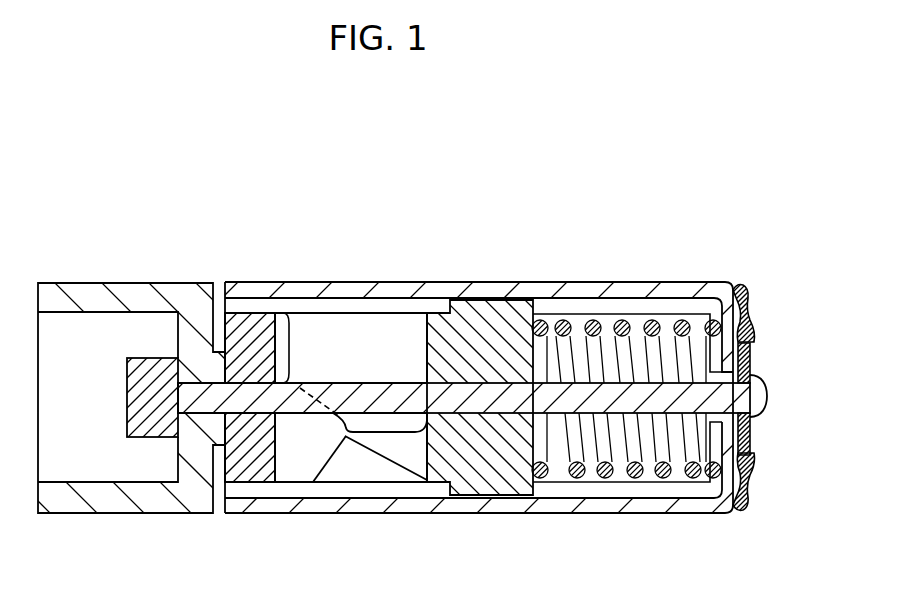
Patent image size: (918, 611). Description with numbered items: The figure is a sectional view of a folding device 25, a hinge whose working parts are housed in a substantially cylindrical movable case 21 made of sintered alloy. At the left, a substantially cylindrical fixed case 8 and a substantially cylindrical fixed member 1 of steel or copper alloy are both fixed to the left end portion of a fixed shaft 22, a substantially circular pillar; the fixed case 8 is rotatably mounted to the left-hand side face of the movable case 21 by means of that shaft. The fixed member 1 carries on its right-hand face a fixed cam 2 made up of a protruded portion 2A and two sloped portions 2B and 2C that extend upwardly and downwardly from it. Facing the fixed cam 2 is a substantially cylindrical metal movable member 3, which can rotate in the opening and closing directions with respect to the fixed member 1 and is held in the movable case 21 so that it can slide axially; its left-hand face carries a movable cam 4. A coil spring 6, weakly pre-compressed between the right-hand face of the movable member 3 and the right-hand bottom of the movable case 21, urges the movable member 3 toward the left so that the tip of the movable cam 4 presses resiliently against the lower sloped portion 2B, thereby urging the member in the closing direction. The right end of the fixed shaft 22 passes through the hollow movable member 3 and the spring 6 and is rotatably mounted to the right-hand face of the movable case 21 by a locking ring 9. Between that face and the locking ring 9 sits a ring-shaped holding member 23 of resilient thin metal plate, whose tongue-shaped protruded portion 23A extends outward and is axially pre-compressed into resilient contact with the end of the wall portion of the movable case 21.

The fixed member 1 is at (245, 473).
The fixed cam 2 is at (343, 400).
The protruded portion 2A is at (342, 437).
The sloped portion 2B is at (324, 467).
The sloped portion 2C is at (310, 395).
The movable member 3 is at (495, 488).
The movable cam 4 is at (388, 458).
The coil spring 6 is at (603, 473).
The fixed case 8 is at (95, 293).
The locking ring 9 is at (750, 440).
The movable case 21 is at (550, 290).
The fixed shaft 22 is at (157, 365).
The holding member 23 is at (750, 330).
The protruded portion 23A is at (745, 290).
The folding device 25 is at (459, 337).